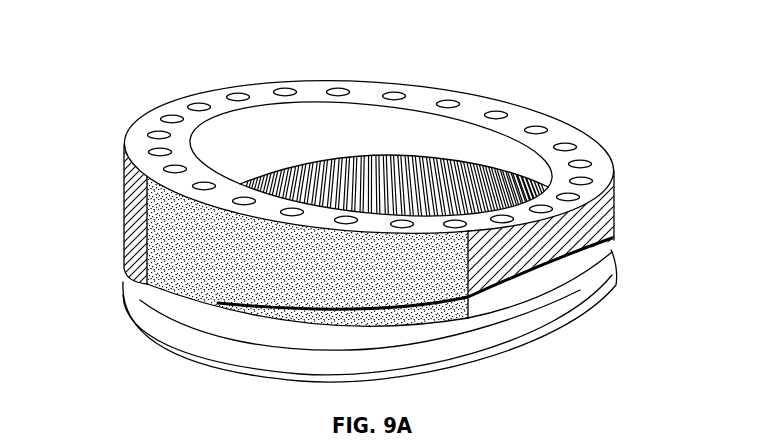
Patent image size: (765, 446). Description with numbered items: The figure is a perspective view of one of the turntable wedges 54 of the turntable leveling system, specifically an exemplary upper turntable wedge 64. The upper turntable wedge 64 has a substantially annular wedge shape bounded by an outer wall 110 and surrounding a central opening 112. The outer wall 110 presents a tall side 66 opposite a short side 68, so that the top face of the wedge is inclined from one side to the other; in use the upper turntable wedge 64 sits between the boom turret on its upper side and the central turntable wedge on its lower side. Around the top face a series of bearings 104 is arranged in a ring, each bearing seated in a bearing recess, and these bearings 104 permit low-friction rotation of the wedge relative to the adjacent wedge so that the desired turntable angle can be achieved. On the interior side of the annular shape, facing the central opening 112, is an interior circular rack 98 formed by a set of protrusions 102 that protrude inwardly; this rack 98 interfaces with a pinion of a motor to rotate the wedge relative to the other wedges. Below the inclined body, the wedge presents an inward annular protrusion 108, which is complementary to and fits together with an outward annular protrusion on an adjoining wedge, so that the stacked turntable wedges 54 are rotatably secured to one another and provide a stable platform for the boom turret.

The turntable wedge 54 is at (630, 93).
The upper turntable wedge 64 is at (207, 97).
The tall side 66 is at (110, 91).
The short side 68 is at (640, 206).
The interior circular rack 98 is at (445, 150).
The protrusions 102 is at (383, 160).
The bearings 104 is at (328, 86).
The inward annular protrusion 108 is at (585, 322).
The outer wall 110 is at (519, 112).
The central opening 112 is at (335, 122).